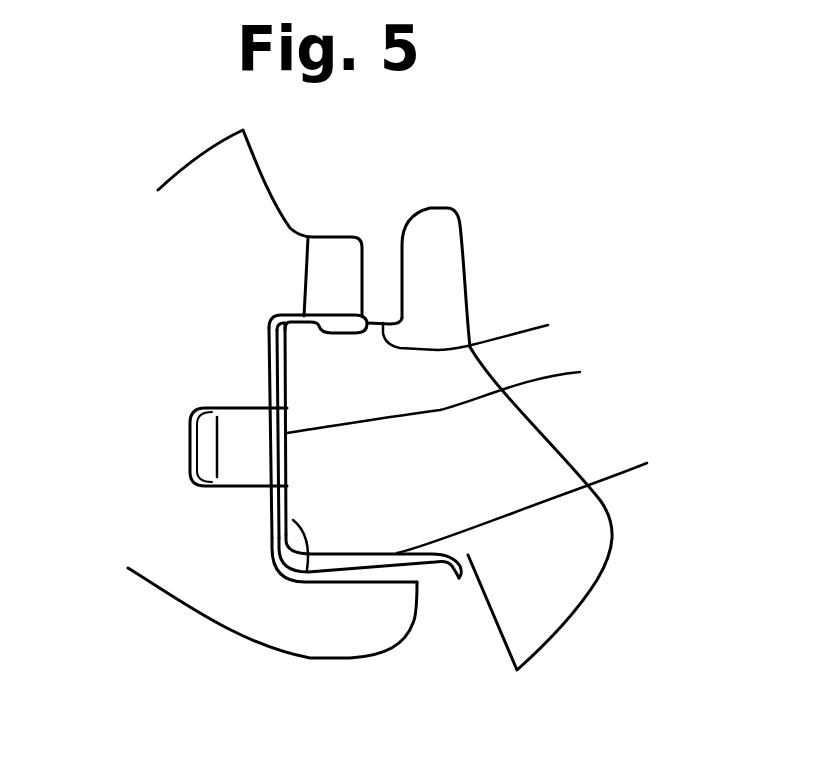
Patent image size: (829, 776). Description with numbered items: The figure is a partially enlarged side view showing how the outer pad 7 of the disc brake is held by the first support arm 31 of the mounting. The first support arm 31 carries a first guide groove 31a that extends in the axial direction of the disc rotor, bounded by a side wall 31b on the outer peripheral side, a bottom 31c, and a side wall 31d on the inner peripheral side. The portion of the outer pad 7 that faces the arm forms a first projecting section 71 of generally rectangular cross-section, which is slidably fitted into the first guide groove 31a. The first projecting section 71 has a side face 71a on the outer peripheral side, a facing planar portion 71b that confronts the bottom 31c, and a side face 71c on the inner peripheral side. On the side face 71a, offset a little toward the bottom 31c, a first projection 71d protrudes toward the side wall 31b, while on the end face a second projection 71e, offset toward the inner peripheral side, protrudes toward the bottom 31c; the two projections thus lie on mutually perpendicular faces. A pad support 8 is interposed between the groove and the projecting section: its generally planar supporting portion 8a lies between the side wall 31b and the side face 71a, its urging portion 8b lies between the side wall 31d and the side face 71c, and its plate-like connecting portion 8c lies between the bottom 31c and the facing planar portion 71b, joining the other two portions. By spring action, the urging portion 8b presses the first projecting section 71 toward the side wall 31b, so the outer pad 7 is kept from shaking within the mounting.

The outer pad 7 is at (447, 470).
The first projecting section 71 is at (352, 503).
The side face of the first projecting section 71a is at (495, 326).
The facing planar portion of the first projecting section 71b is at (463, 391).
The side face of the first projecting section on the inner peripheral side 71c is at (550, 498).
The first projection 71d is at (313, 333).
The second projection 71e is at (300, 580).
The pad support 8 is at (188, 452).
The supporting portion 8a is at (367, 322).
The urging portion 8b is at (430, 565).
The connecting portion 8c is at (277, 505).
The first support arm 31 is at (192, 373).
The first guide groove 31a is at (279, 577).
The side wall of the first guide groove 31b is at (298, 316).
The bottom of the first guide groove 31c is at (268, 345).
The side wall of the first guide groove on the inner peripheral side 31d is at (385, 582).